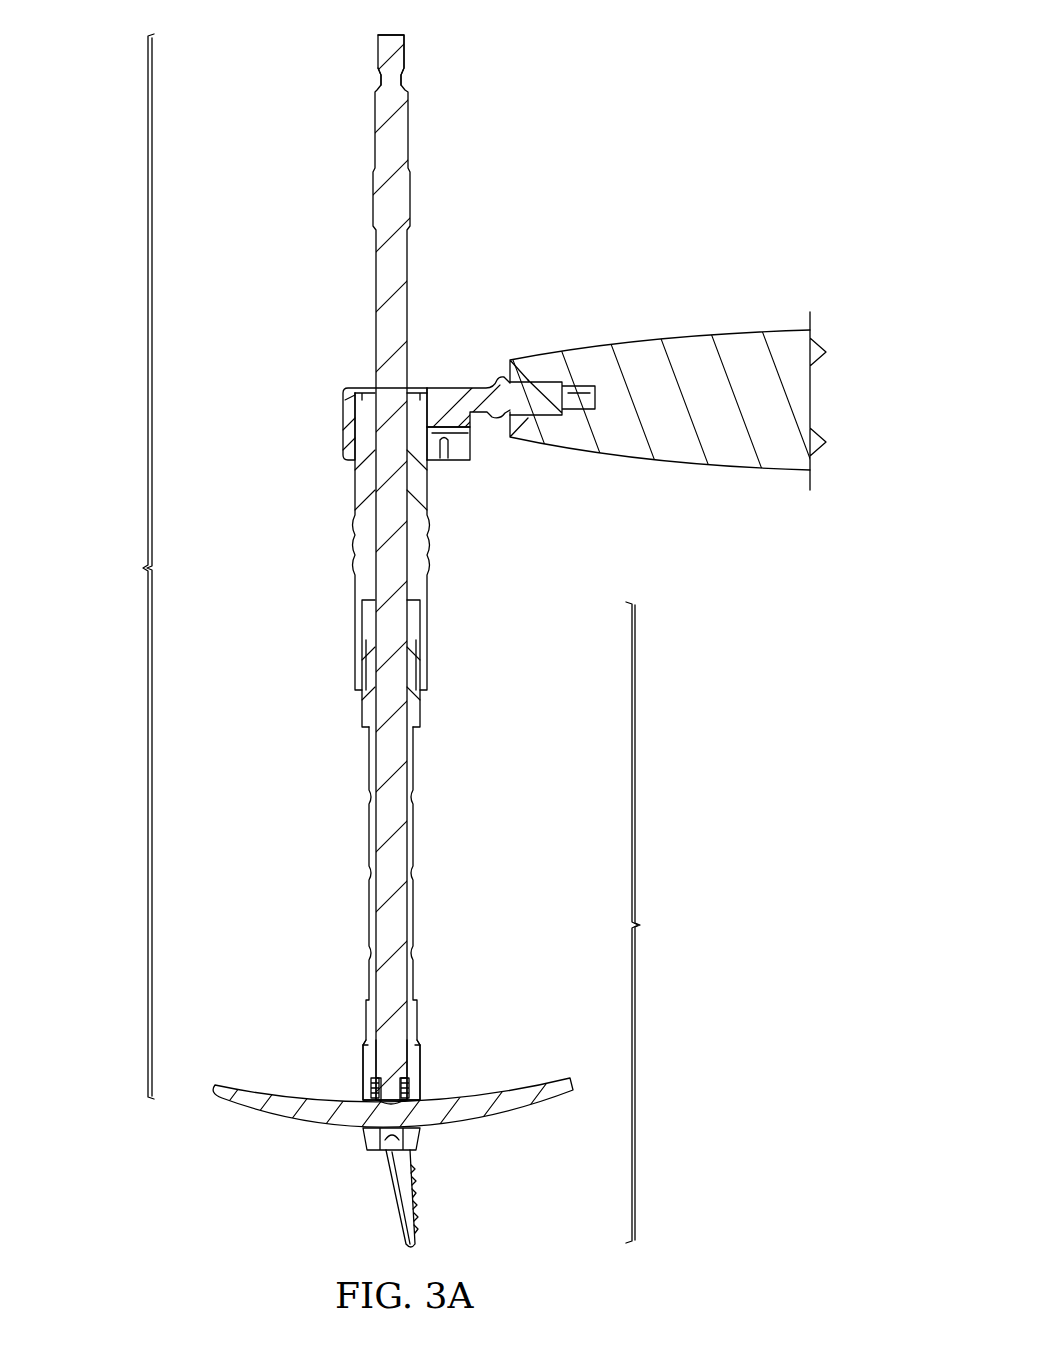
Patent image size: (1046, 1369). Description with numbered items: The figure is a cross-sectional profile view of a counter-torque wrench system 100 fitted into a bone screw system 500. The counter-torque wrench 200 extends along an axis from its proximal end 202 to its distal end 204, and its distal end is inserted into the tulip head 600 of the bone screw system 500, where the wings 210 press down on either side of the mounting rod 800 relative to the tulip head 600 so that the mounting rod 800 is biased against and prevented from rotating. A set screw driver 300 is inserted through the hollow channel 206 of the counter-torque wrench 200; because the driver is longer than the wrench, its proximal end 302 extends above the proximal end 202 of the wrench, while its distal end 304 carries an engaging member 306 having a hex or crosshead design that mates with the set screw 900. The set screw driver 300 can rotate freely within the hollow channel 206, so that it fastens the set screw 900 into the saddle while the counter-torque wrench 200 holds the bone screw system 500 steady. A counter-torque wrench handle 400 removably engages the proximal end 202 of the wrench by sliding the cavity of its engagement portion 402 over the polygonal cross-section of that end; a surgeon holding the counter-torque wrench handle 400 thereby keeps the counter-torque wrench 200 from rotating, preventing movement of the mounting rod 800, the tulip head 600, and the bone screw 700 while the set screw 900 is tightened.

The counter-torque wrench system 100 is at (124, 566).
The counter-torque wrench 200 is at (332, 782).
The proximal end 202 is at (330, 419).
The distal end 204 is at (286, 1043).
The hollow channel 206 is at (366, 382).
The wing 210 is at (362, 1048).
The set screw driver 300 is at (440, 194).
The proximal end 302 is at (432, 40).
The distal end 304 is at (484, 1060).
The engaging member 306 is at (385, 1115).
The counter-torque wrench handle 400 is at (757, 310).
The engagement portion 402 is at (455, 386).
The bone screw system 500 is at (659, 922).
The tulip head 600 is at (428, 1144).
The bone screw 700 is at (372, 1202).
The mounting rod 800 is at (545, 1125).
The set screw 900 is at (364, 1088).